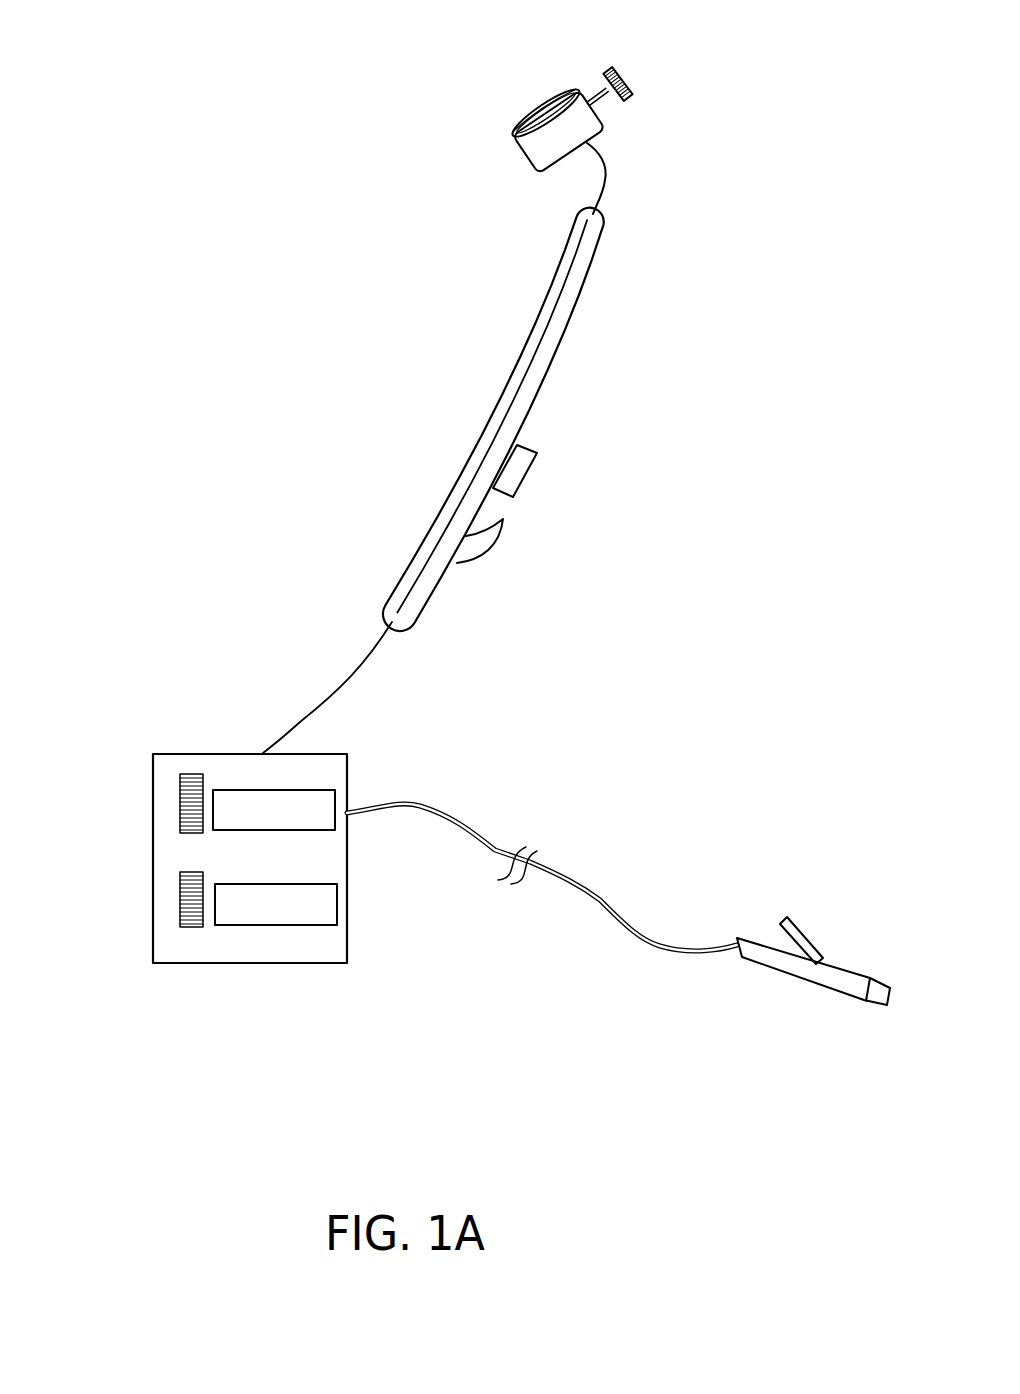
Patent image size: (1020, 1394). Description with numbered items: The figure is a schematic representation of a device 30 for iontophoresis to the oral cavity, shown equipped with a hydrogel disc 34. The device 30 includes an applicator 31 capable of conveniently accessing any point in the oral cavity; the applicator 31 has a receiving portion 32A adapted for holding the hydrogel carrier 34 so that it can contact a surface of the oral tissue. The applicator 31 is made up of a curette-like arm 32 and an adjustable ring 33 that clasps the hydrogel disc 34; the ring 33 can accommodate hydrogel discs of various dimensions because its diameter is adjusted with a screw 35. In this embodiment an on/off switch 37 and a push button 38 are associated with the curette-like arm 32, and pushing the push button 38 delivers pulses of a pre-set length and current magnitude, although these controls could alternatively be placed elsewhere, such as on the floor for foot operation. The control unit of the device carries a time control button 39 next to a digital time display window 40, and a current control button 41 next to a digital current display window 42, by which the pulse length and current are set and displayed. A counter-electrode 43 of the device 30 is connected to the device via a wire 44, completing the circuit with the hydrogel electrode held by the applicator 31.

The device 30 is at (300, 166).
The applicator 31 is at (580, 419).
The curette-like arm 32 is at (568, 331).
The receiving portion 32A is at (662, 147).
The adjustable ring 33 is at (520, 158).
The hydrogel disc 34 is at (546, 108).
The screw 35 is at (630, 78).
The on/off switch 37 is at (478, 558).
The push button 38 is at (537, 480).
The time control button 39 is at (178, 898).
The digital time display window 40 is at (292, 927).
The current control button 41 is at (178, 810).
The digital current display window 42 is at (267, 833).
The counter-electrode 43 is at (848, 967).
The wire 44 is at (597, 898).